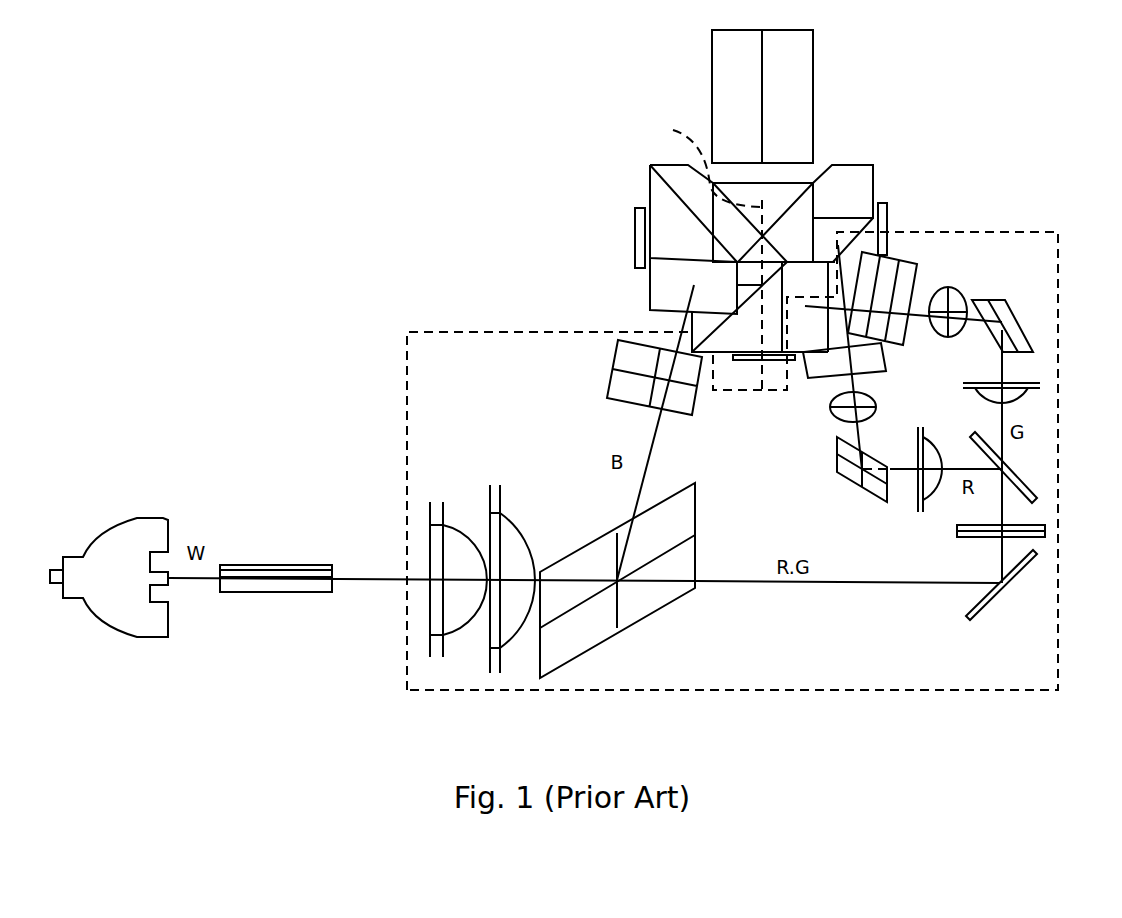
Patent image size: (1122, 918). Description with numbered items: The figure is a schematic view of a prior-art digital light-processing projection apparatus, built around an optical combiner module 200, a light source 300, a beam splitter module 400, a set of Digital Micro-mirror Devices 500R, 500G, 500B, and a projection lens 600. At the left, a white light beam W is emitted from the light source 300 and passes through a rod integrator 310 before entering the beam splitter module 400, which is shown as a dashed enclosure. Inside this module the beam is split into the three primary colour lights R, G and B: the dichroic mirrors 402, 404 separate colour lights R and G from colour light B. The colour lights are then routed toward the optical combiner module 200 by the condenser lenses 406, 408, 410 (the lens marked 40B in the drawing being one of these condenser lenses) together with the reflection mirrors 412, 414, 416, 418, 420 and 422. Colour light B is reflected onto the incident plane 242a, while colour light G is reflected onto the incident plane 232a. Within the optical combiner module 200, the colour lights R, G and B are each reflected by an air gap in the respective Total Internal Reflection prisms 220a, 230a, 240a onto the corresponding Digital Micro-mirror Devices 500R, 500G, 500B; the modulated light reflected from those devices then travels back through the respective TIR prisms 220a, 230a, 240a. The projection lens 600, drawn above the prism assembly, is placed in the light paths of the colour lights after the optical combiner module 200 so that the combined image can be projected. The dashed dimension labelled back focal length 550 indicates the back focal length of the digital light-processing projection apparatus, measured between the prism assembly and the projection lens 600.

The optical combiner module 200 is at (878, 142).
The TIR prism 220a is at (876, 178).
The TIR prism 230a is at (720, 357).
The incident plane 232a is at (848, 340).
The TIR prism 240a is at (648, 177).
The incident plane 242a is at (650, 298).
The back focal length 550 is at (698, 163).
The projection lens 600 is at (813, 85).
The Digital Micro-mirror Device 500B is at (633, 240).
The Digital Micro-mirror Device 500R is at (890, 222).
The Digital Micro-mirror Device 500G is at (763, 362).
The light source 300 is at (130, 637).
The rod integrator 310 is at (283, 592).
The beam splitter module 400 is at (406, 382).
The dichroic mirror 402 is at (605, 640).
The dichroic mirror 404 is at (1013, 477).
The condenser lens 406 is at (455, 640).
The condenser lens 408 is at (958, 283).
The condenser lens 40B is at (1035, 382).
The condenser lens 410 is at (918, 490).
The reflection mirror 412 is at (622, 388).
The reflection mirror 414 is at (995, 602).
The reflection mirror 416 is at (1010, 312).
The reflection mirror 418 is at (905, 270).
The reflection mirror 420 is at (847, 472).
The reflection mirror 422 is at (838, 423).